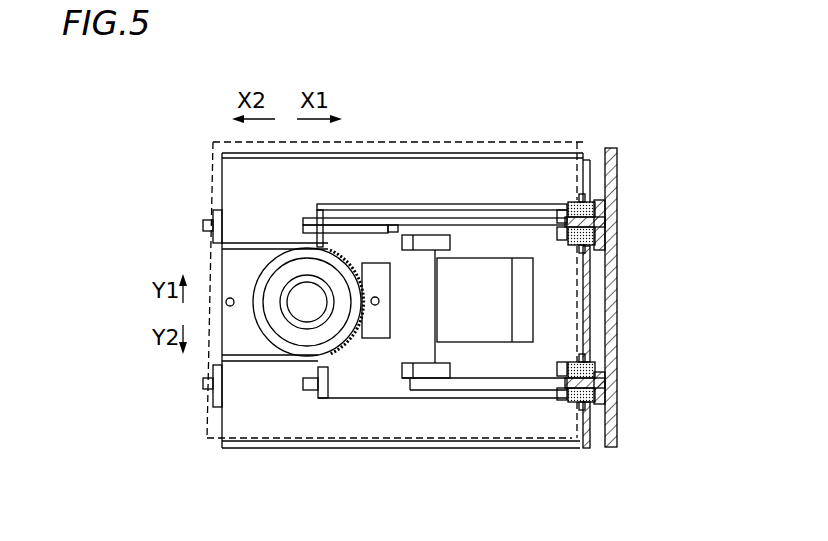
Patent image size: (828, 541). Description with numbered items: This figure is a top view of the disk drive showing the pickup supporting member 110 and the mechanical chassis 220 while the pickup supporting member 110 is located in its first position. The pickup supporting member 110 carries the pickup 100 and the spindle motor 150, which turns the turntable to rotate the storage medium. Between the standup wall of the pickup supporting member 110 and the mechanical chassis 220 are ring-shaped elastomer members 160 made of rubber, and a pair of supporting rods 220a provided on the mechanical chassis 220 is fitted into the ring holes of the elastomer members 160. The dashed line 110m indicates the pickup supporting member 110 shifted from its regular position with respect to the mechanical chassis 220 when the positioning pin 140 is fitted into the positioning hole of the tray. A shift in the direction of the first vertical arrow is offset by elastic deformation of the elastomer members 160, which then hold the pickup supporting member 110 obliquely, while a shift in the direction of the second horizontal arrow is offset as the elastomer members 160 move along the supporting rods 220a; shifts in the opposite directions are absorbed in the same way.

The pickup 100 is at (367, 387).
The pickup supporting member 110 is at (237, 273).
The dashed line 110m is at (213, 153).
The positioning pin 140 is at (230, 307).
The spindle motor 150 is at (282, 343).
The elastomer members 160 is at (572, 200).
The mechanical chassis 220 is at (617, 420).
The supporting rods 220a is at (600, 215).